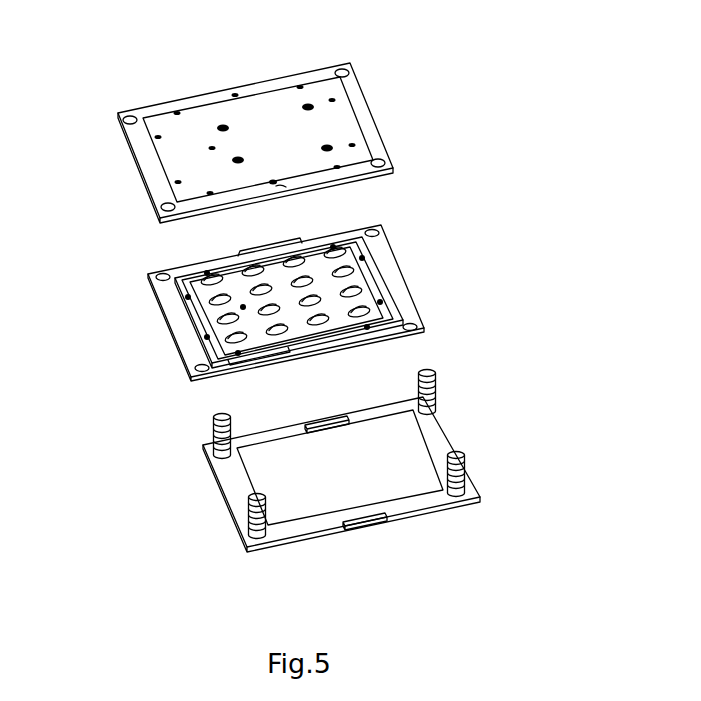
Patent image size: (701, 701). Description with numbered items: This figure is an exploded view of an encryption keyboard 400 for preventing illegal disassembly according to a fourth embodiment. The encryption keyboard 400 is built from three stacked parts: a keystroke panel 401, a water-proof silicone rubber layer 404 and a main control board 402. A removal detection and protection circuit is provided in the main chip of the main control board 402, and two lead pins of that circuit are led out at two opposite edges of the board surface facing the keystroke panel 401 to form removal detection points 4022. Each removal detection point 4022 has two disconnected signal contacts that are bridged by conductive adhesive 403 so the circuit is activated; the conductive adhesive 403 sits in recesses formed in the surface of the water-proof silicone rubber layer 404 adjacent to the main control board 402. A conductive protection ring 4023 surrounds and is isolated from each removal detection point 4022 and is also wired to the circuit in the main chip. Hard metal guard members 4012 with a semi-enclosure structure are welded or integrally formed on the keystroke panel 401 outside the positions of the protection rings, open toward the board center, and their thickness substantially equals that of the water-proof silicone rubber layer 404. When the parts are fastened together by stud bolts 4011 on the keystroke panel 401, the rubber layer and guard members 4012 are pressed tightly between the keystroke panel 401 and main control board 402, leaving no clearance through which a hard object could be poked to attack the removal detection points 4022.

The encryption keyboard 400 is at (88, 48).
The keystroke panel 401 is at (438, 440).
The stud bolts 4011 is at (437, 378).
The hard metal guard members 4012 is at (388, 518).
The main control board 402 is at (368, 113).
The removal detection points 4022 is at (281, 188).
The conductive protection ring 4023 is at (271, 182).
The conductive adhesive 403 is at (245, 254).
The water-proof silicone rubber layer 404 is at (355, 282).